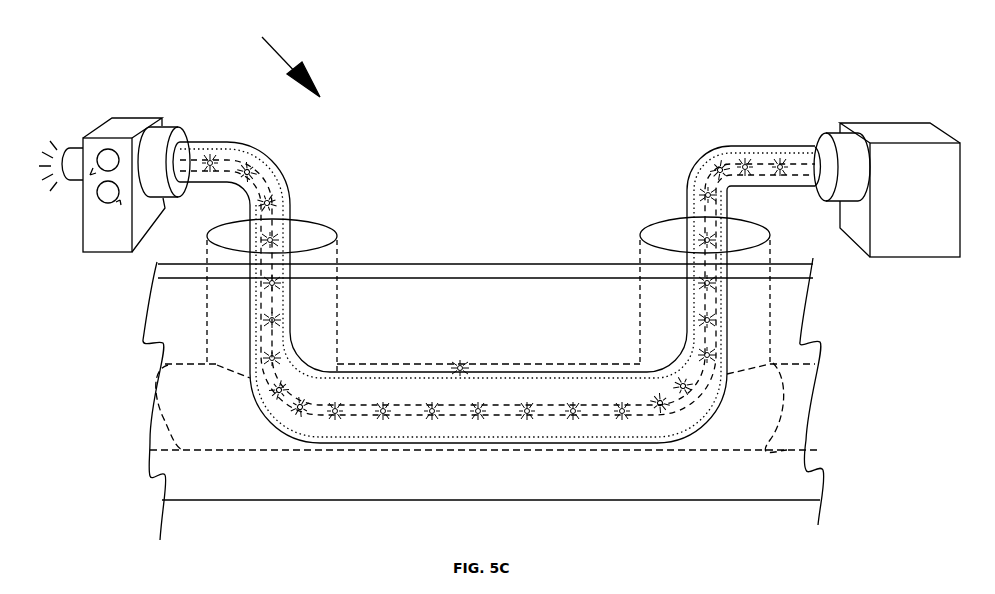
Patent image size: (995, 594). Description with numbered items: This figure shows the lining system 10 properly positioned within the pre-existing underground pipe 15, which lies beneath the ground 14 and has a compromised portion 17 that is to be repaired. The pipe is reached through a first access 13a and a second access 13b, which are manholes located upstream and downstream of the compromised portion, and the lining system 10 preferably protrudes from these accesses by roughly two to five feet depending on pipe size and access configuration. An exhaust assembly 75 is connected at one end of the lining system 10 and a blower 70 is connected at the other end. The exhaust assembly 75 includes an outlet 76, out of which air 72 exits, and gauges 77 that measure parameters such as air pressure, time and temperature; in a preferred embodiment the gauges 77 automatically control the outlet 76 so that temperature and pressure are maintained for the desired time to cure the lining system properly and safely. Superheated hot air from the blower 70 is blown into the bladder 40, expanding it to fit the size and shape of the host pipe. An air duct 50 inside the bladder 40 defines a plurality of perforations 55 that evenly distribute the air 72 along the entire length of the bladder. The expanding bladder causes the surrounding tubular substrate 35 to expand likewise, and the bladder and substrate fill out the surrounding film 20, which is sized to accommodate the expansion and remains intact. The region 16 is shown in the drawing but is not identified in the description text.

The lining system 10 is at (251, 36).
The first access 13a is at (328, 238).
The second access 13b is at (668, 225).
The ground 14 is at (483, 399).
The pipe 15 is at (530, 363).
The cavity region 16 is at (744, 433).
The compromised portion 17 is at (463, 370).
The film 20 is at (408, 370).
The tubular substrate 35 is at (358, 375).
The bladder 40 is at (391, 425).
The air duct 50 is at (448, 418).
The perforations 55 is at (530, 414).
The blower 70 is at (901, 194).
The air 72 is at (662, 405).
The exhaust assembly 75 is at (130, 126).
The outlet 76 is at (73, 148).
The gauges 77 is at (120, 200).